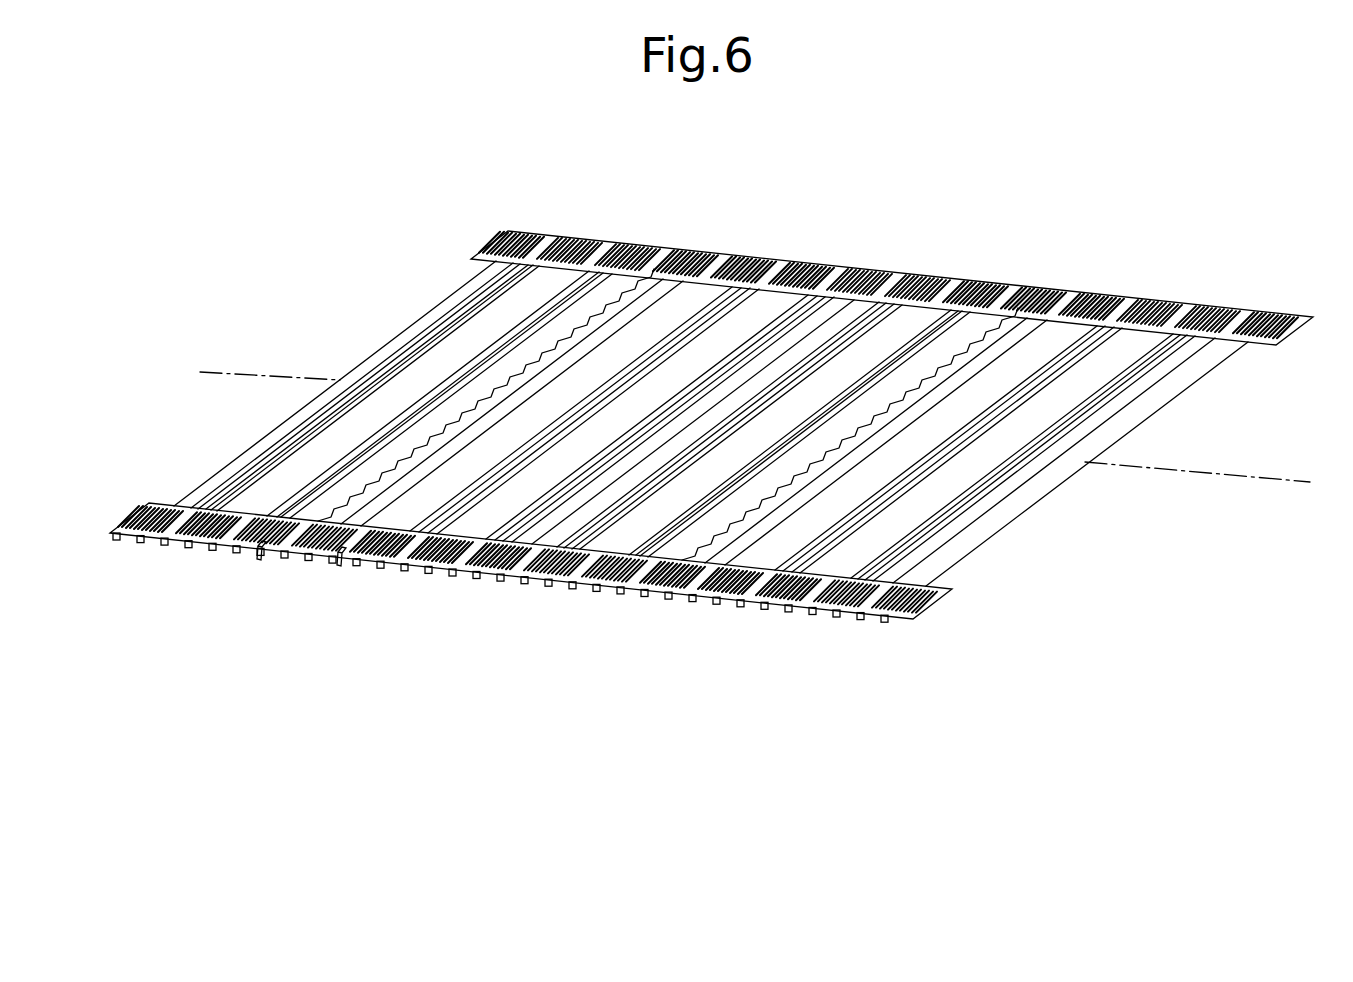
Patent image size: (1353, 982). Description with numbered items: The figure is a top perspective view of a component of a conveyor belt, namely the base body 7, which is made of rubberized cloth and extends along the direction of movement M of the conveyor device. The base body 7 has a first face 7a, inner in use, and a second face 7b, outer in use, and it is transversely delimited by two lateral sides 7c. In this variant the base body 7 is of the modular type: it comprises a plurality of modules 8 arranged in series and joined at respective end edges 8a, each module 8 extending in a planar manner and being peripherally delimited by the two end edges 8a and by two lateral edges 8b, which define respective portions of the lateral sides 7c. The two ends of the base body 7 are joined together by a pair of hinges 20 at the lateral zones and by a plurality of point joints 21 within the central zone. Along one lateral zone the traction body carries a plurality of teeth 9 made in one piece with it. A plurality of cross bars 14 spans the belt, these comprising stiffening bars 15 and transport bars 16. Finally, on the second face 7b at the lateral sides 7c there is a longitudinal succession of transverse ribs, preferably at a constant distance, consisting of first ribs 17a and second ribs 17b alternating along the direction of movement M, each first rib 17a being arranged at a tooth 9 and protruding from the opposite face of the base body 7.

The base body 7 is at (415, 366).
The first face 7a is at (1170, 400).
The second face 7b is at (1153, 380).
The lateral sides 7c is at (1104, 288).
The module 8 is at (893, 184).
The end edges 8a is at (185, 492).
The lateral edges 8b is at (905, 258).
The teeth 9 is at (192, 548).
The cross bars 14 is at (566, 312).
The stiffening bars 15 is at (625, 237).
The transport bars 16 is at (686, 238).
The first ribs 17a is at (328, 578).
The second ribs 17b is at (377, 577).
The hinges 20 is at (510, 222).
The point joints 21 is at (441, 305).
The direction of movement M is at (1240, 482).